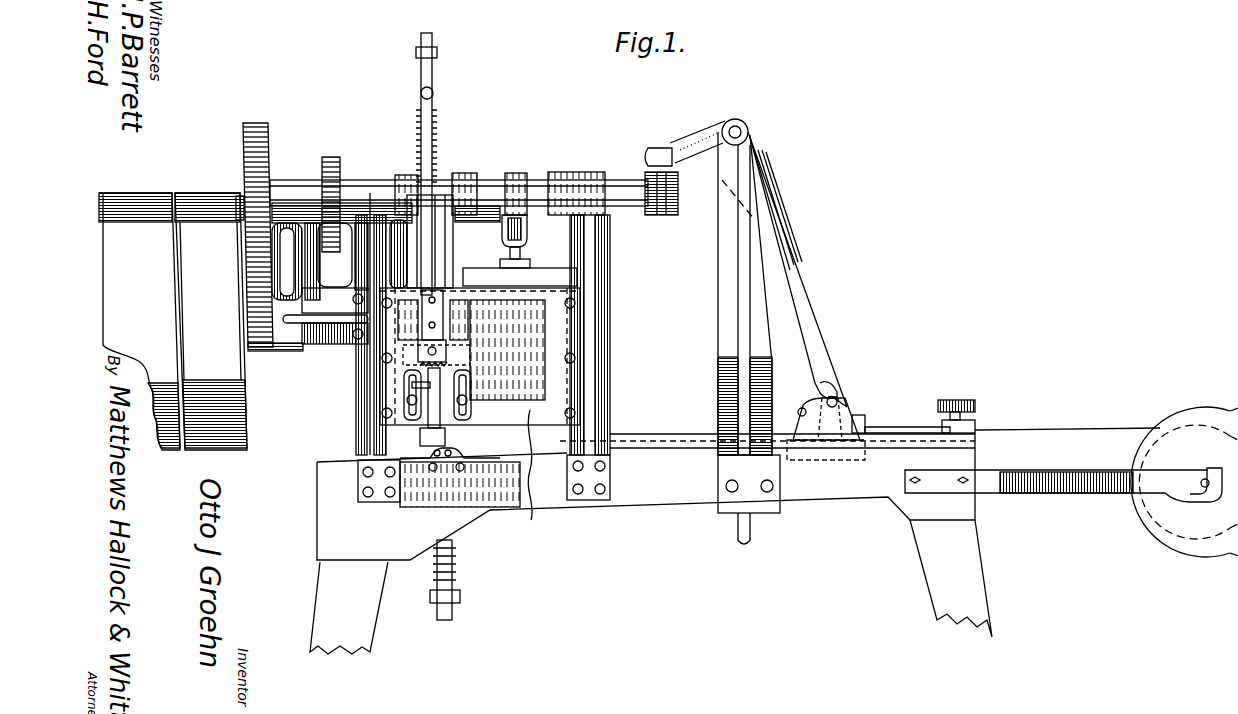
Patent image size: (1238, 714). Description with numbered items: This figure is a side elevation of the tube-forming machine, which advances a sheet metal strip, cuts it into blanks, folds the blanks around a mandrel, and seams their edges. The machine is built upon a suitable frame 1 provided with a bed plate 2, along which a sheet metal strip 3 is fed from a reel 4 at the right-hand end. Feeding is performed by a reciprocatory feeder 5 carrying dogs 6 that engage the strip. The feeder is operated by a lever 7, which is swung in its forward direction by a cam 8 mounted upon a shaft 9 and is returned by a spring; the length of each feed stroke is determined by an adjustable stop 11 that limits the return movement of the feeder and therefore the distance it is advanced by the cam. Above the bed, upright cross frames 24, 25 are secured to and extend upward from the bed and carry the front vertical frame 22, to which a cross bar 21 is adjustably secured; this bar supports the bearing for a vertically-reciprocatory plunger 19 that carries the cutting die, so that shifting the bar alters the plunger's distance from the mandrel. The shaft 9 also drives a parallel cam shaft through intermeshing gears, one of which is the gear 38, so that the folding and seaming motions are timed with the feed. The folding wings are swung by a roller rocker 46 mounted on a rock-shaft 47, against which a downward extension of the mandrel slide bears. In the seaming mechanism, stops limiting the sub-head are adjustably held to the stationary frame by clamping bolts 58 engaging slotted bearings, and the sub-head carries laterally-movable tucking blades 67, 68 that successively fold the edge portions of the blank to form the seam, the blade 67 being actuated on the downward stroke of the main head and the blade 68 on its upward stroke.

The frame 1 is at (330, 578).
The bed plate 2 is at (687, 476).
The sheet metal strip 3 is at (1035, 428).
The reel 4 is at (1160, 525).
The reciprocatory feeder 5 is at (860, 412).
The dogs 6 is at (800, 412).
The lever 7 is at (800, 300).
The cam 8 is at (668, 215).
The shaft 9 is at (619, 180).
The adjustable stop 11 is at (922, 420).
The vertically-reciprocatory plunger 19 is at (524, 250).
The cross bar 21 is at (503, 264).
The front vertical frame 22 is at (480, 423).
The upright cross frame 24 is at (598, 244).
The upright cross frame 25 is at (355, 275).
The gear 38 is at (332, 157).
The roller rocker 46 is at (462, 470).
The rock-shaft 47 is at (432, 472).
The clamping bolts 58 is at (404, 405).
The tucking blade 67 is at (447, 378).
The tucking blade 68 is at (410, 385).